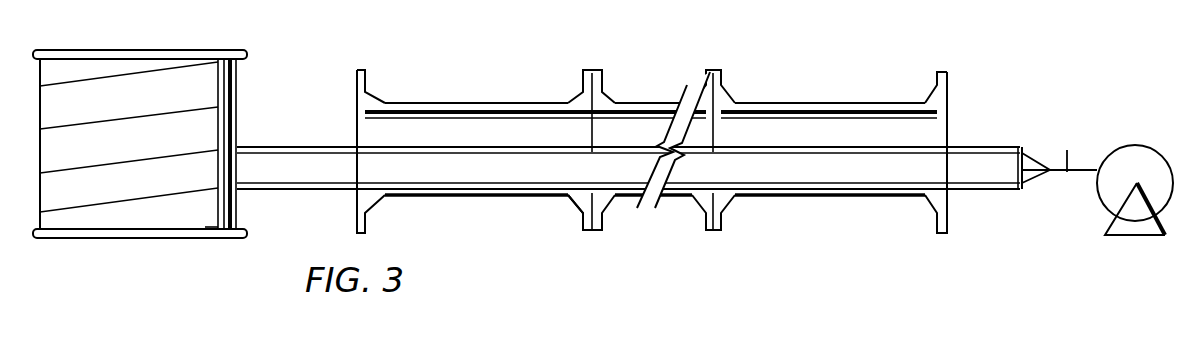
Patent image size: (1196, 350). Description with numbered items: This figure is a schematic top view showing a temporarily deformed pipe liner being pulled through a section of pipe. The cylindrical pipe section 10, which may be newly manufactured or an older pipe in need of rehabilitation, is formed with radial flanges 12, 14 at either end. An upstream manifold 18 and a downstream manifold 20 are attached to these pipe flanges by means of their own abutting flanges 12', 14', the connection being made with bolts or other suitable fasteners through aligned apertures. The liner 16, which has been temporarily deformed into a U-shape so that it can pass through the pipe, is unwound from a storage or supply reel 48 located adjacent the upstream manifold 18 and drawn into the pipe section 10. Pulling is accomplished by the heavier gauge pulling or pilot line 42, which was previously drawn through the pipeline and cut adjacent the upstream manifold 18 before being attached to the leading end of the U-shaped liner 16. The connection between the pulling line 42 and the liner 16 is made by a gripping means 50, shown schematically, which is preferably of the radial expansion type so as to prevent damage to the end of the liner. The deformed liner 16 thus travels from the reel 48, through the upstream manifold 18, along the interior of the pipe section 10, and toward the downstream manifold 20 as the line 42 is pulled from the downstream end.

The cylindrical pipe section 10 is at (652, 168).
The radial flange 12 is at (592, 168).
The abutting flange 12' is at (568, 226).
The radial flange 14 is at (712, 168).
The abutting flange 14' is at (740, 212).
The cylindrical liner 16 is at (350, 165).
The upstream manifold 18 is at (498, 199).
The downstream manifold 20 is at (878, 197).
The pulling or pilot line 42 is at (1111, 180).
The storage or supply reel 48 is at (194, 50).
The gripping means 50 is at (1027, 184).